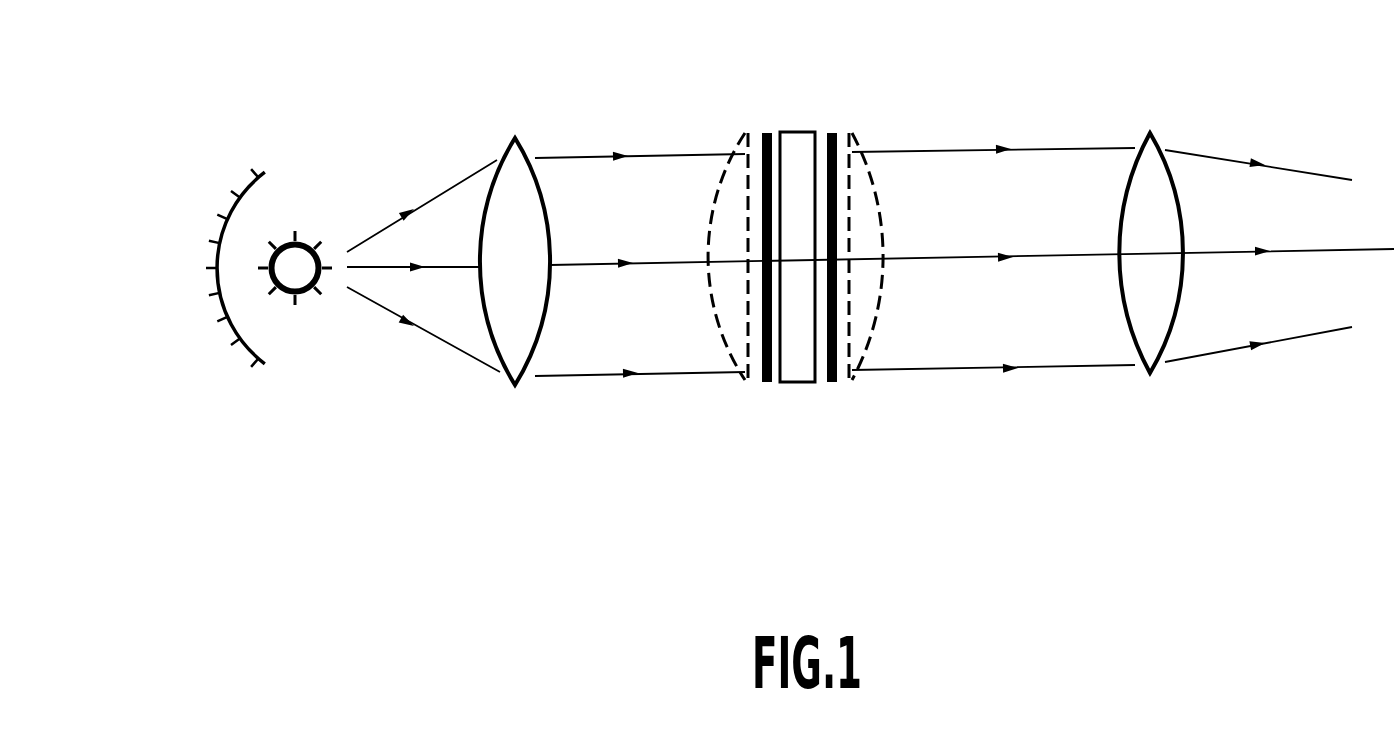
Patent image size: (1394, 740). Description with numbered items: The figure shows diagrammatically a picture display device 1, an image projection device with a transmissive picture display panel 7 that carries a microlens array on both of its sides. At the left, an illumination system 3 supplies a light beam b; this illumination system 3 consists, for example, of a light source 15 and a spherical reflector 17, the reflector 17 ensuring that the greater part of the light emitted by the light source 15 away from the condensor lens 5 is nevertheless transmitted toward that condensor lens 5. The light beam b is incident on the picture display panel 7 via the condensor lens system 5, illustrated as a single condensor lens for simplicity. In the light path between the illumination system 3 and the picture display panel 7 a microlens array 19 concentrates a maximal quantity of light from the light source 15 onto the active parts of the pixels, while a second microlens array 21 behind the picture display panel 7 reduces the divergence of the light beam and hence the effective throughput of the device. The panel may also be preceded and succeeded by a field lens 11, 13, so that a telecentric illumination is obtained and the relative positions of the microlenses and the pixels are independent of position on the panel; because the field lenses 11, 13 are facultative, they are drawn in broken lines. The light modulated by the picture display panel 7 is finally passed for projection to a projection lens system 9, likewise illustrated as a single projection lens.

The picture display device 1 is at (348, 448).
The illumination system 3 is at (224, 297).
The condensor lens system 5 is at (515, 135).
The picture display panel 7 is at (797, 130).
The projection lens system 9 is at (1147, 130).
The field lens 11 is at (720, 340).
The field lens 13 is at (872, 343).
The light source 15 is at (305, 243).
The spherical reflector 17 is at (240, 187).
The microlens array 19 is at (766, 384).
The second microlens array 21 is at (833, 384).
The light beam b is at (447, 315).